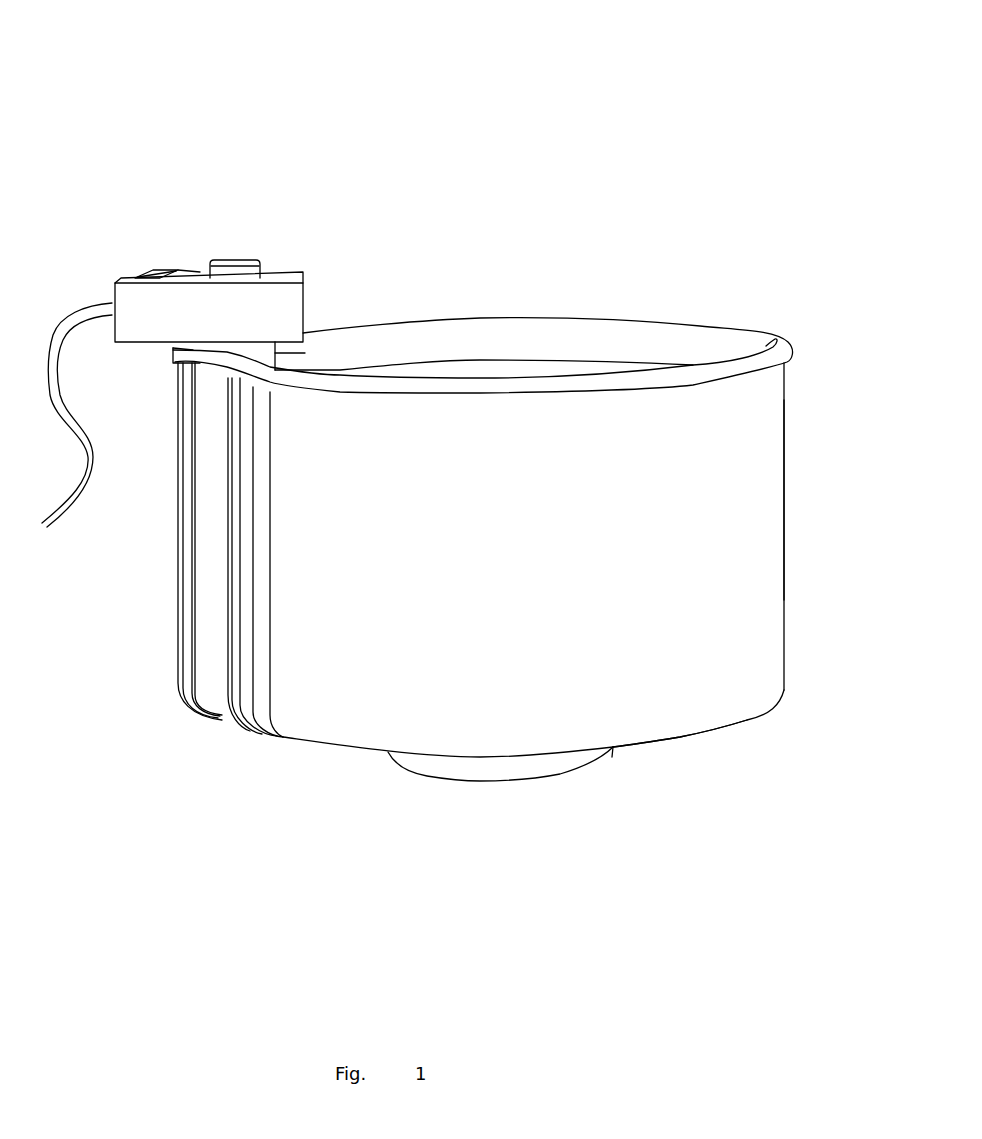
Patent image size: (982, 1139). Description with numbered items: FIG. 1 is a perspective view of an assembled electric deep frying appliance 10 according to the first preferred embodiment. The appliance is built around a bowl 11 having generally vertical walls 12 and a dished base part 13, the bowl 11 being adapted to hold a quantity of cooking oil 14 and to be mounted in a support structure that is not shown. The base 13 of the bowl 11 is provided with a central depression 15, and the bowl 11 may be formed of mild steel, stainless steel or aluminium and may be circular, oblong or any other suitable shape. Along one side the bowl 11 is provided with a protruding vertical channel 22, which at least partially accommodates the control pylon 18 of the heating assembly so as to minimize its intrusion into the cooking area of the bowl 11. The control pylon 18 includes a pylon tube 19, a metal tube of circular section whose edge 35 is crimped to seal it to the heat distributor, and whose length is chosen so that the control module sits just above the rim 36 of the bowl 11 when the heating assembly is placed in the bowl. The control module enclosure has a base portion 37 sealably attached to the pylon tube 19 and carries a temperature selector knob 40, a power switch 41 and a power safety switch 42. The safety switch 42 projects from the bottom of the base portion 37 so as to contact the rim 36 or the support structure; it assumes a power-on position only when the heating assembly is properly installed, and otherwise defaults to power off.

The electric deep frying appliance 10 is at (622, 97).
The bowl 11 is at (792, 462).
The walls 12 is at (775, 570).
The dished base part 13 is at (680, 737).
The cooking oil 14 is at (547, 370).
The central depression 15 is at (440, 765).
The control pylon 18 is at (305, 205).
The pylon tube 19 is at (305, 353).
The protruding vertical channel 22 is at (200, 568).
The edge 35 is at (433, 318).
The rim 36 is at (127, 300).
The base portion 37 is at (190, 272).
The temperature selector knob 40 is at (252, 258).
The power switch 41 is at (140, 270).
The power safety switch 42 is at (170, 347).